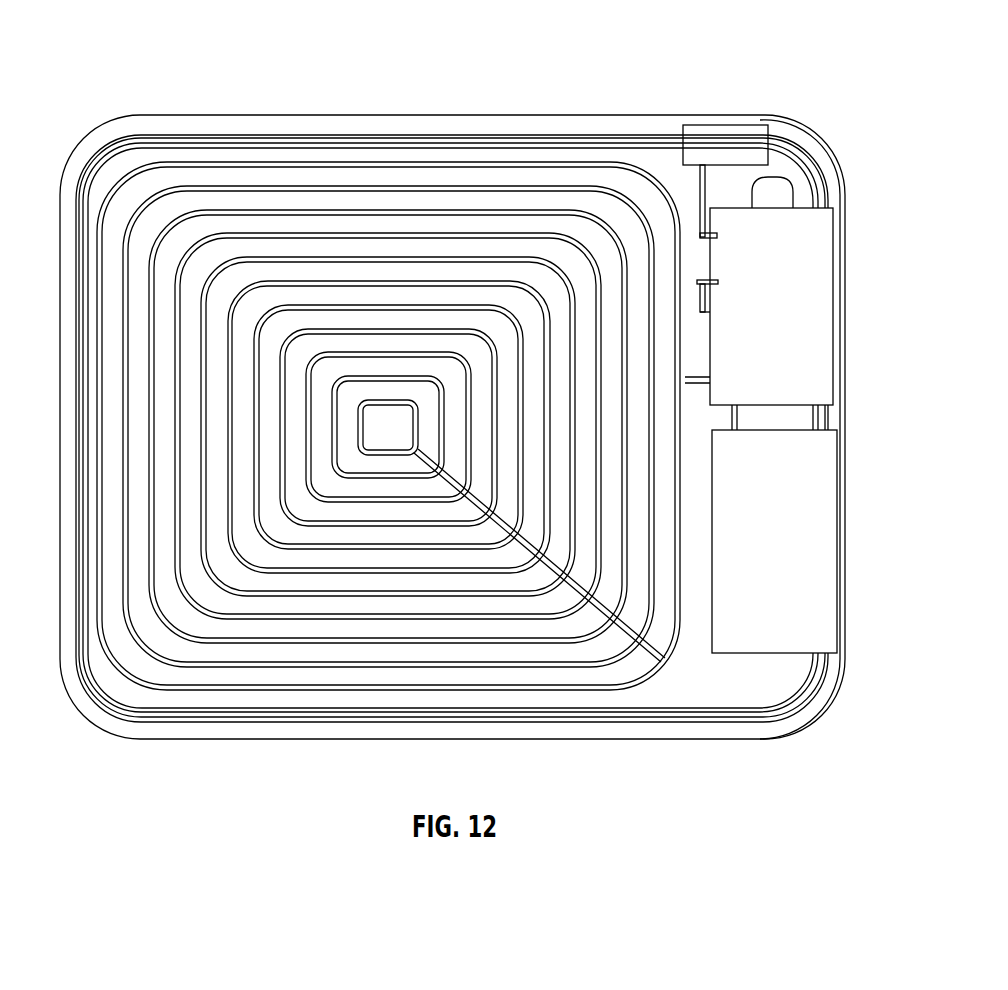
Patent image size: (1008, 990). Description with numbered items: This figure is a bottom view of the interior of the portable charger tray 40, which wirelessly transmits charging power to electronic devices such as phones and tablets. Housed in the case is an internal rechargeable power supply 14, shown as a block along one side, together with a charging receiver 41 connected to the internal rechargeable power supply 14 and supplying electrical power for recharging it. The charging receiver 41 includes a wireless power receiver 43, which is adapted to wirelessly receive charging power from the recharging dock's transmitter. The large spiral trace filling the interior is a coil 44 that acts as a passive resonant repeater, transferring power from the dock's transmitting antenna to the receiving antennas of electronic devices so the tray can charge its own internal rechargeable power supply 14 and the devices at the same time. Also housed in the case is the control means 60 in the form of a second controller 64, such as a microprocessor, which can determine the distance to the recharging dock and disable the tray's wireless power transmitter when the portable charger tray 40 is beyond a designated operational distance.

The portable charger tray 40 is at (110, 48).
The charging receiver 41 is at (580, 680).
The wireless power receiver 43 is at (535, 690).
The coil 44 is at (780, 707).
The control means 60 is at (782, 243).
The second controller 64 is at (819, 150).
The internal rechargeable power supply 14 is at (798, 560).